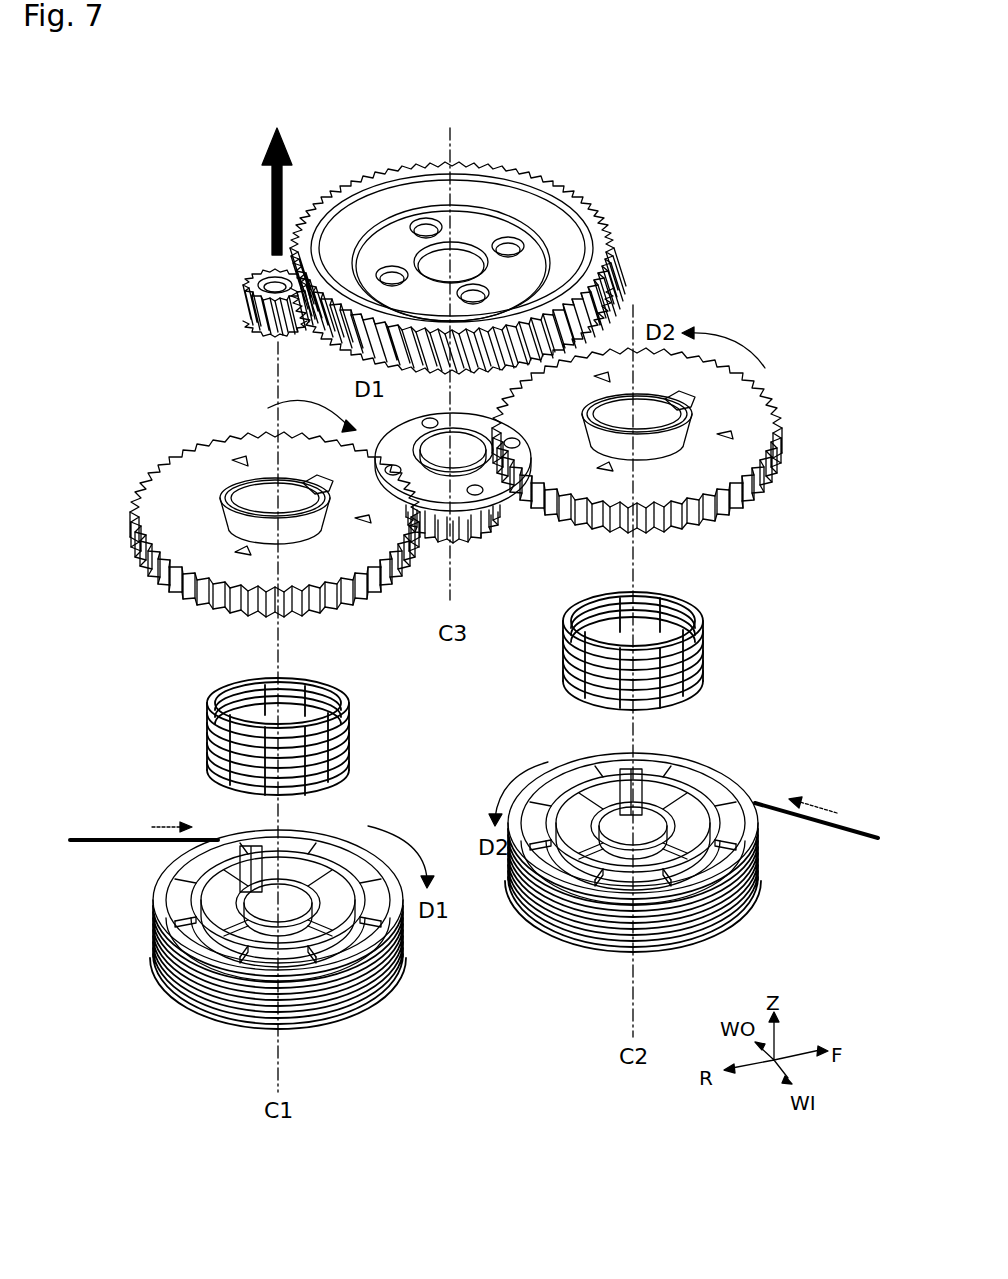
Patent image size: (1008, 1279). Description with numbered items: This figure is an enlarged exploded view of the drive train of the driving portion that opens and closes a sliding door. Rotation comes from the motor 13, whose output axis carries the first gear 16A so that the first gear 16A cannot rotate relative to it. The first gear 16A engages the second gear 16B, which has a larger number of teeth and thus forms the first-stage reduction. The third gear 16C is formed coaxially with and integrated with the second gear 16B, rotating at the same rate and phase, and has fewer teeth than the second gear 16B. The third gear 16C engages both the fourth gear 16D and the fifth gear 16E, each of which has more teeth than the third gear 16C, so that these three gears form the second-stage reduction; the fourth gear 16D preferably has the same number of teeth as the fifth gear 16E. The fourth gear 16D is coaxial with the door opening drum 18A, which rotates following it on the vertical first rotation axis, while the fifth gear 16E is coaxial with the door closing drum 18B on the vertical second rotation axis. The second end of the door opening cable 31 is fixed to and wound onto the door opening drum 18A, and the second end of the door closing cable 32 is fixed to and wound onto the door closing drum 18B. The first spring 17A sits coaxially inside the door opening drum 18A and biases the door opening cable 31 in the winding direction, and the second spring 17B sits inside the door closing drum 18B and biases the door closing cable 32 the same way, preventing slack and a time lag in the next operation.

The motor 13 is at (295, 174).
The first gear 16A is at (232, 300).
The second gear 16B is at (612, 240).
The third gear 16C is at (500, 542).
The fourth gear 16D is at (135, 518).
The fifth gear 16E is at (768, 378).
The first spring 17A is at (208, 737).
The second spring 17B is at (708, 646).
The door opening drum 18A is at (155, 932).
The door closing drum 18B is at (770, 870).
The door opening cable 31 is at (107, 838).
The door closing cable 32 is at (771, 800).